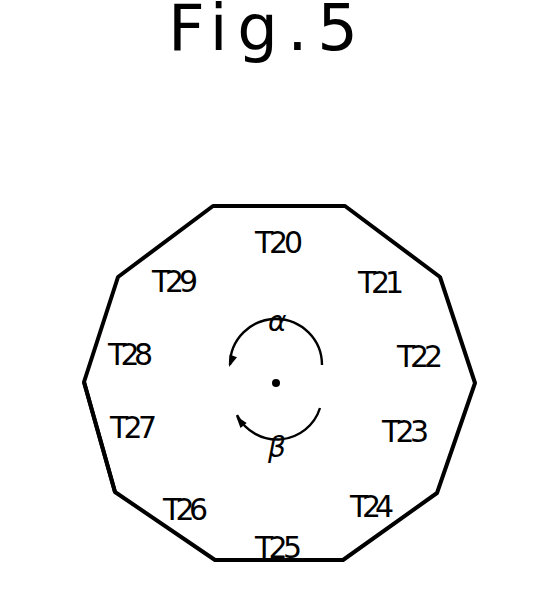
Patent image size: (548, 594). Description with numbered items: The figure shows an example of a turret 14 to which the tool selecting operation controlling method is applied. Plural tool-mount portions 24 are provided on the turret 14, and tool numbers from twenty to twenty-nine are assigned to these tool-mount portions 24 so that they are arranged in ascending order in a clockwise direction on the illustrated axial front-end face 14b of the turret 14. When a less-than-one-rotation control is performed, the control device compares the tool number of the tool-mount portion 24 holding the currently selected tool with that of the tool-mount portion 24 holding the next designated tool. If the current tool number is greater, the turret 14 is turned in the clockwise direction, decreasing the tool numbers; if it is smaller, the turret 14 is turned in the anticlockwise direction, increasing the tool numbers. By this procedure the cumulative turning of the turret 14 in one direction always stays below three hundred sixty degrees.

The turret 14 is at (124, 209).
The tool-mount portions 24 is at (290, 205).
The axial front-end face 14b is at (127, 385).